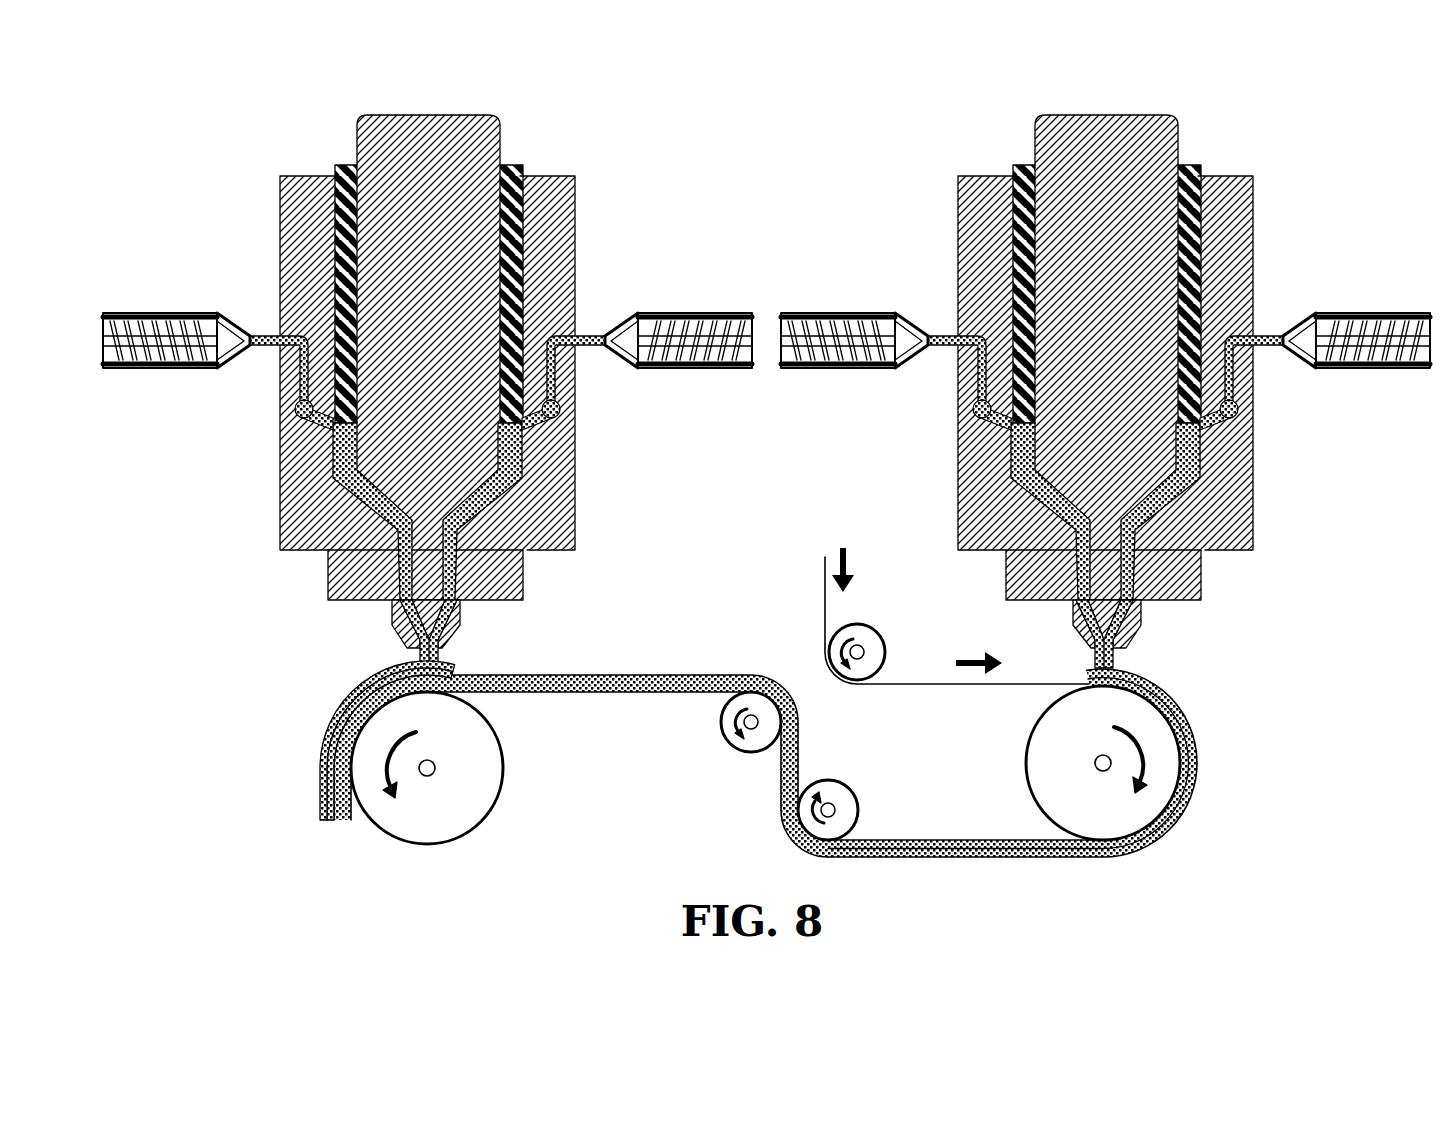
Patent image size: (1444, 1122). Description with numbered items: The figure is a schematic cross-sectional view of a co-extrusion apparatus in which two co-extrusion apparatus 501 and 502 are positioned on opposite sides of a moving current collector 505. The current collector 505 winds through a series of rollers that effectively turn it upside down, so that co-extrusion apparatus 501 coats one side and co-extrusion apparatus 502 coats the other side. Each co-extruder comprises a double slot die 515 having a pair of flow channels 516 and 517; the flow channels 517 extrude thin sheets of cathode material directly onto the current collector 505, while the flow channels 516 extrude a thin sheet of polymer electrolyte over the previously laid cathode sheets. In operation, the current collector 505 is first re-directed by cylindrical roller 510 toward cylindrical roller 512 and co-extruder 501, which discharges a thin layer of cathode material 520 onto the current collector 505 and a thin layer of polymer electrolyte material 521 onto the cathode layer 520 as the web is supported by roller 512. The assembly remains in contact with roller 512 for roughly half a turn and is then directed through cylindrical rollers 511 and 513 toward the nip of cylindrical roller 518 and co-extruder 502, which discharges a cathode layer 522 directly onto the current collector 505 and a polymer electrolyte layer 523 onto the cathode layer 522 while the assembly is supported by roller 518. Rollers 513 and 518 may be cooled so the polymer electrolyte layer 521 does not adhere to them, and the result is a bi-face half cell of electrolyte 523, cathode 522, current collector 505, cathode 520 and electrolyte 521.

The co-extrusion apparatus 501 is at (1070, 113).
The co-extrusion apparatus 502 is at (464, 113).
The current collector 505 is at (632, 673).
The cylindrical roller 510 is at (876, 652).
The cylindrical roller 511 is at (848, 812).
The cylindrical roller 512 is at (1068, 745).
The cylindrical roller 513 is at (748, 740).
The double slot die 515 is at (447, 645).
The flow channel 516 is at (405, 628).
The flow channel 517 is at (455, 626).
The cylindrical roller 518 is at (480, 770).
The cathode material layer 520 is at (1040, 845).
The polymer electrolyte material layer 521 is at (1088, 858).
The cathode material layer 522 is at (330, 762).
The polymer electrolyte material layer 523 is at (330, 730).